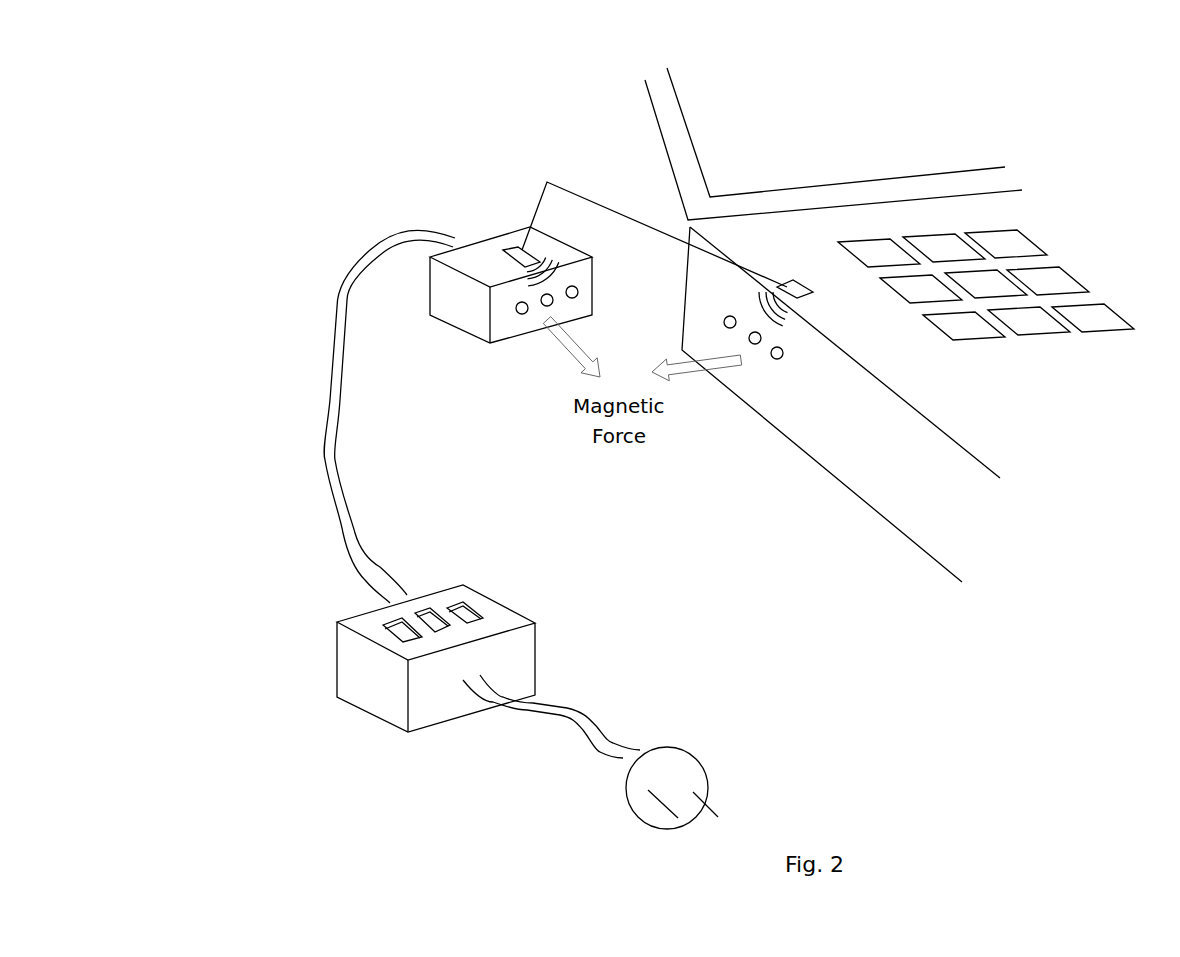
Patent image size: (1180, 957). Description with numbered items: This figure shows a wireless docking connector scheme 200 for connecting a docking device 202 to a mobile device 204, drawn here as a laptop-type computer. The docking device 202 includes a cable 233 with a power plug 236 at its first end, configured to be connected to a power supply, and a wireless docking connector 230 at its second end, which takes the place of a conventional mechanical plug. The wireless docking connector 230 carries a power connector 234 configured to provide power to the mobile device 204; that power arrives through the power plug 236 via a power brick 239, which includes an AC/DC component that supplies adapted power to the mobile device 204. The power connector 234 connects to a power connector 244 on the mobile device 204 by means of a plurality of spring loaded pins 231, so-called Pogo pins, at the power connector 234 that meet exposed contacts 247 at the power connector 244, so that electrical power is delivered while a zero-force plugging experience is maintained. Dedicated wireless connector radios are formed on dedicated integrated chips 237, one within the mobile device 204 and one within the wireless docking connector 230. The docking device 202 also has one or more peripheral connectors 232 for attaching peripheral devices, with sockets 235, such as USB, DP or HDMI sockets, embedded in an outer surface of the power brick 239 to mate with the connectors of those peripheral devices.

The charging system 200 is at (453, 93).
The docking device 202 is at (240, 323).
The mobile device 204 is at (935, 507).
The wireless docking connector 230 is at (497, 237).
The spring loaded pins 231 is at (517, 311).
The peripheral connectors 232 is at (392, 613).
The cable 233 is at (325, 452).
The power connector 234 is at (582, 275).
The sockets 235 is at (462, 613).
The power plug 236 is at (690, 778).
The integrated chips 237 is at (652, 221).
The power brick 239 is at (513, 660).
The power connector 244 is at (708, 312).
The exposed contacts 247 is at (775, 356).